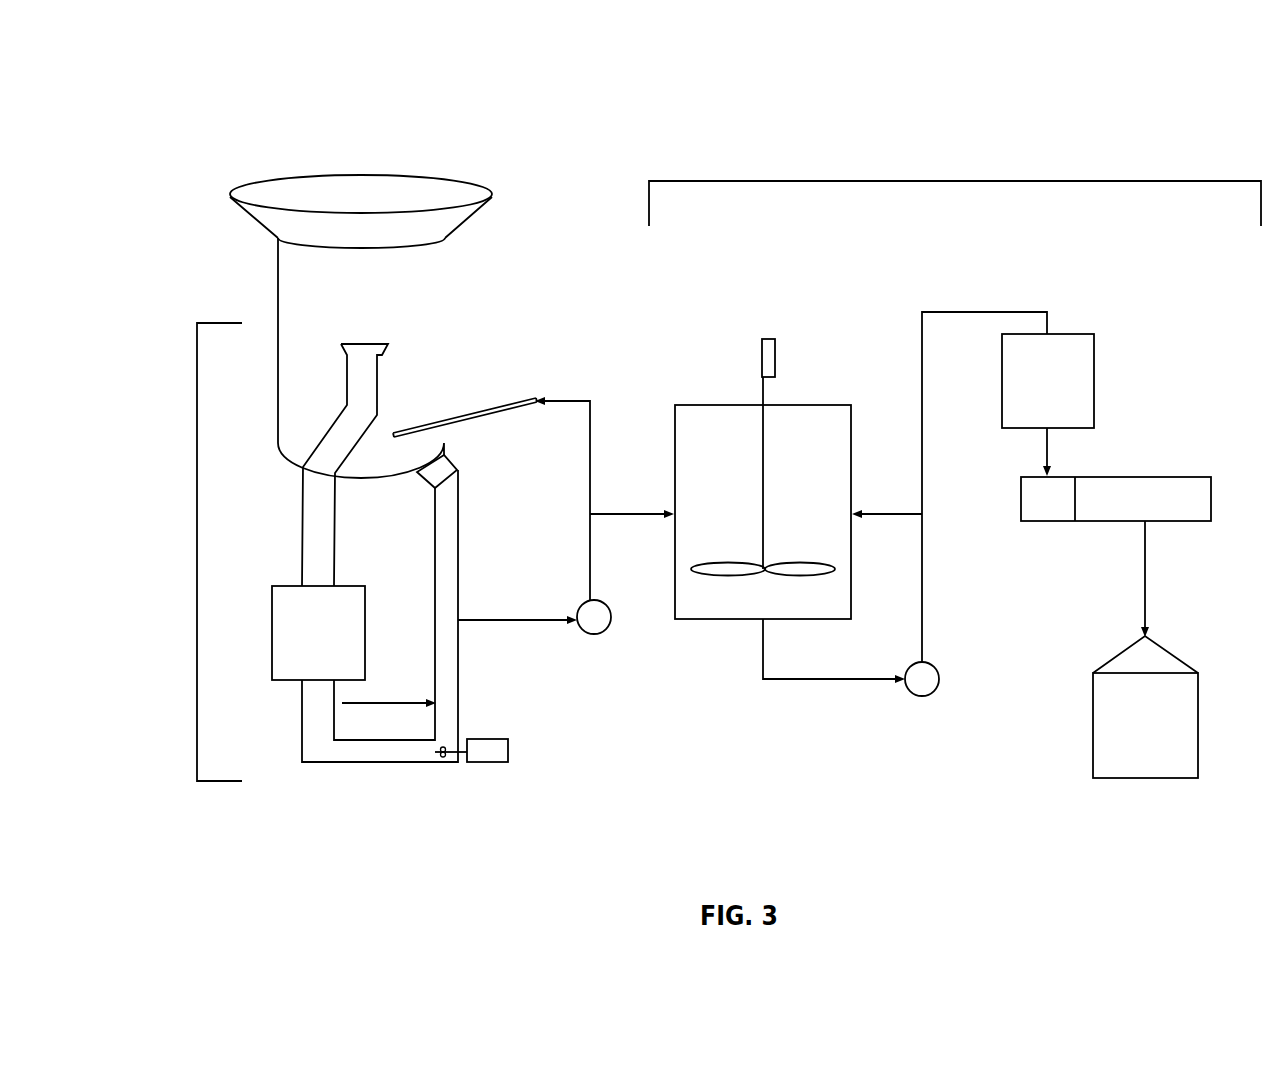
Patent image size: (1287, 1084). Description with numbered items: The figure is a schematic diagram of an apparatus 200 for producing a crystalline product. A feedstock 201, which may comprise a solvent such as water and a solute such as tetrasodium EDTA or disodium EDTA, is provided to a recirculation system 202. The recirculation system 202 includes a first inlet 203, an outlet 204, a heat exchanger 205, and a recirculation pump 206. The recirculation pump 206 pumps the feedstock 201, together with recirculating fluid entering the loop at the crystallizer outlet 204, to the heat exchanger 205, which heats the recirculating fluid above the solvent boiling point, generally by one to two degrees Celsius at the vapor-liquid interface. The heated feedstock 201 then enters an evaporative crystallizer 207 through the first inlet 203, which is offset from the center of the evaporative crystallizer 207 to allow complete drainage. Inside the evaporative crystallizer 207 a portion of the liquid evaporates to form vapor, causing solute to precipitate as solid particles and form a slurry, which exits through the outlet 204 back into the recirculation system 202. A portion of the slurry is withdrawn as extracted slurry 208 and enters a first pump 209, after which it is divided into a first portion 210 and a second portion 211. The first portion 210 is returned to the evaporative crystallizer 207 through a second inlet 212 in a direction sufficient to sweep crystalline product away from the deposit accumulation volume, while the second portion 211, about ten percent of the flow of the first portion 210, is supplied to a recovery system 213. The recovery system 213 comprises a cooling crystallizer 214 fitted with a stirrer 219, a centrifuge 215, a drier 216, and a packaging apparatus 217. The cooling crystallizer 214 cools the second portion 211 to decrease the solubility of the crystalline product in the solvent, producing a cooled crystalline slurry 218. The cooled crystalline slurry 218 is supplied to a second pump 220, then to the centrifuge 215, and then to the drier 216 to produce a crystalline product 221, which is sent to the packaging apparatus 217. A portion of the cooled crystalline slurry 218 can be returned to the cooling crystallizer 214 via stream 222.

The apparatus 200 is at (220, 123).
The feedstock 201 is at (387, 700).
The recirculation system 202 is at (195, 553).
The first inlet 203 is at (345, 391).
The outlet 204 is at (449, 462).
The heat exchanger 205 is at (296, 683).
The recirculation pump 206 is at (500, 767).
The evaporative crystallizer 207 is at (277, 299).
The extracted slurry 208 is at (495, 622).
The first pump 209 is at (598, 636).
The first portion 210 is at (570, 405).
The second portion 211 is at (652, 516).
The second inlet 212 is at (506, 400).
The recovery system 213 is at (967, 181).
The cooling crystallizer 214 is at (674, 445).
The centrifuge 215 is at (1096, 378).
The drier 216 is at (1212, 498).
The packaging apparatus 217 is at (1135, 778).
The cooled crystalline slurry 218 is at (817, 682).
The stirrer 219 is at (763, 339).
The second pump 220 is at (922, 697).
The crystalline product 221 is at (1142, 563).
The stream 222 is at (877, 517).